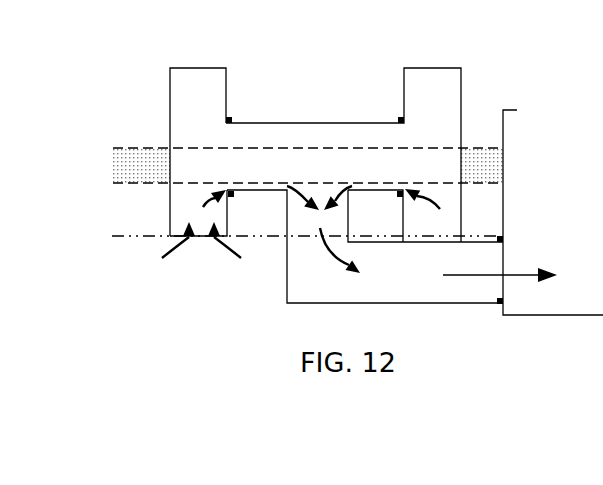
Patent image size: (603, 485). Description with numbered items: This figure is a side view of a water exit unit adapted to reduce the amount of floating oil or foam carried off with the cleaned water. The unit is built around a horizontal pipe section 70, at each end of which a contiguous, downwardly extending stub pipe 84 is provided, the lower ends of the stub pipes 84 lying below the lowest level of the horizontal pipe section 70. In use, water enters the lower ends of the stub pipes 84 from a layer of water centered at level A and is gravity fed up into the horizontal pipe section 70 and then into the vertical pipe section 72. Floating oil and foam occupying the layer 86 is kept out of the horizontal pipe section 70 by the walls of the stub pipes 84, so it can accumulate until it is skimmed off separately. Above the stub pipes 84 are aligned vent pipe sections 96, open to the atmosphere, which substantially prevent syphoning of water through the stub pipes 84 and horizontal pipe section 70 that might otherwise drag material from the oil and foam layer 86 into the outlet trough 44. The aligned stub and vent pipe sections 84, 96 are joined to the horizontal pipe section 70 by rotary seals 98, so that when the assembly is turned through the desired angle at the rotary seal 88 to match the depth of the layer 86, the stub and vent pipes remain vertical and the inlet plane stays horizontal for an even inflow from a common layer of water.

The outlet trough 44 is at (503, 118).
The horizontal pipe section 70 is at (357, 123).
The vertical pipe section 72 is at (288, 225).
The stub pipes 84 is at (180, 205).
The layer 86 is at (132, 170).
The rotary seal 88 is at (500, 305).
The vent pipe sections 96 is at (192, 92).
The rotary seals 98 is at (230, 122).
The level A is at (195, 183).